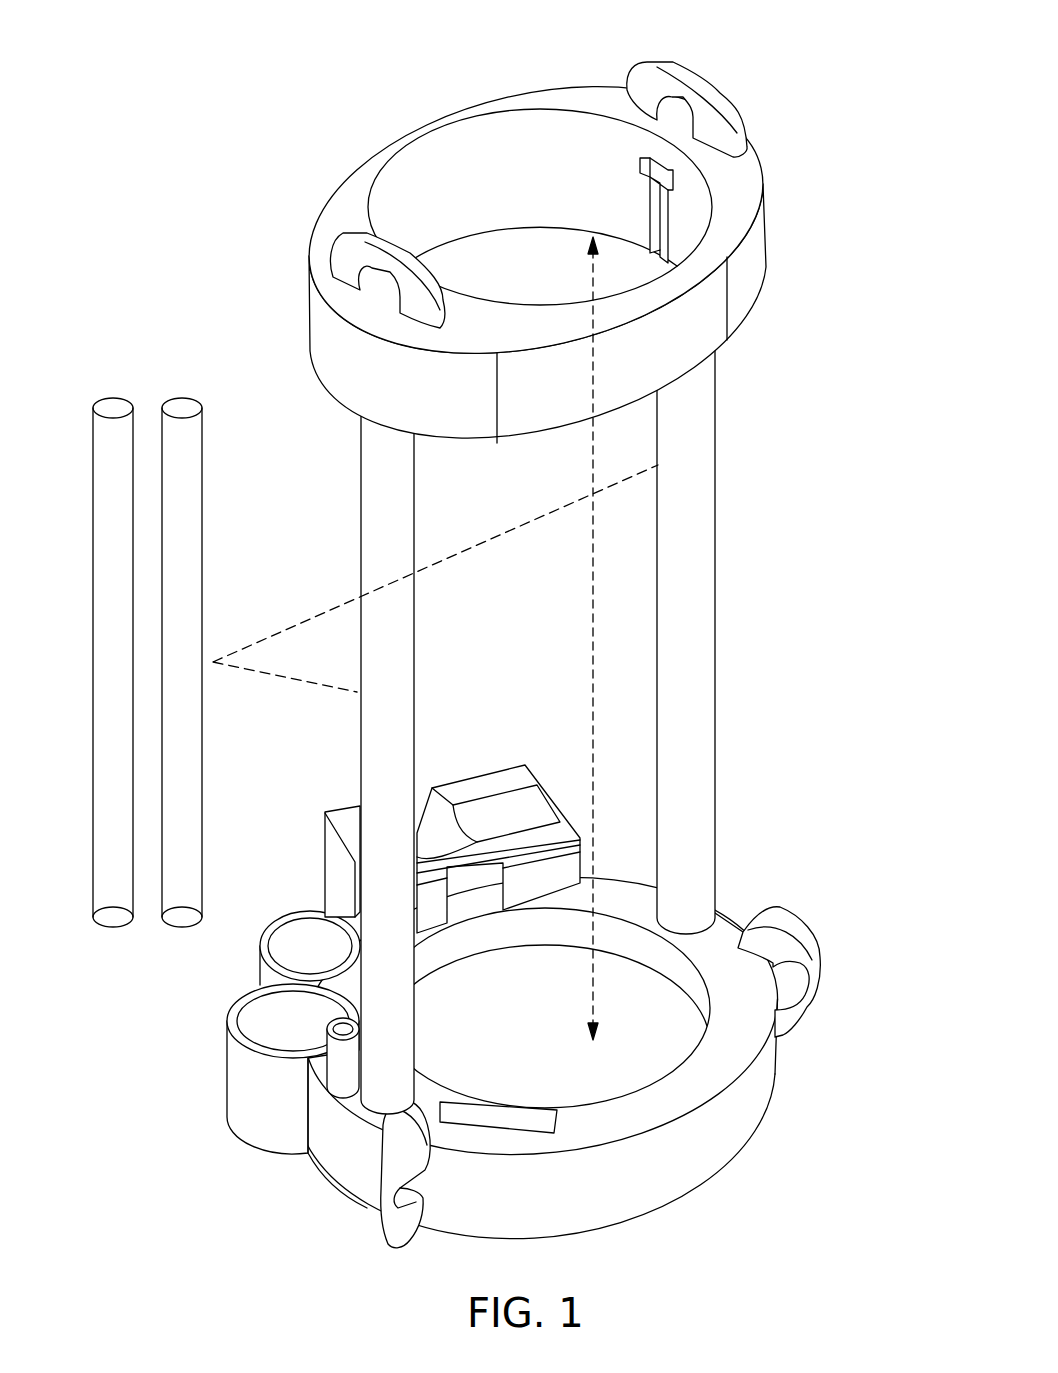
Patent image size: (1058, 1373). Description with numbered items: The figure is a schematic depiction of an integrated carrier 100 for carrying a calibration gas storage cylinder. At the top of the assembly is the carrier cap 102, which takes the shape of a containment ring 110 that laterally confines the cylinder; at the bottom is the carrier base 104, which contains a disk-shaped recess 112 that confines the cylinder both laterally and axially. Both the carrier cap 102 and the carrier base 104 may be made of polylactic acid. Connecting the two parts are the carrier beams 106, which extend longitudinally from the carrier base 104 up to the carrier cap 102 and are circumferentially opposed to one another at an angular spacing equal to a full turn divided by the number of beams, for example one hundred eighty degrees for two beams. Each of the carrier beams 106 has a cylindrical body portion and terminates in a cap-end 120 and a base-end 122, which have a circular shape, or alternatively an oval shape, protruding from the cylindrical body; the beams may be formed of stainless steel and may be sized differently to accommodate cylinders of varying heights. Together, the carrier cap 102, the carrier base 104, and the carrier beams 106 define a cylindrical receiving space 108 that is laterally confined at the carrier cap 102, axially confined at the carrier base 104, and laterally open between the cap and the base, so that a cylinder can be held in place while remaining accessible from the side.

The integrated carrier 100 is at (875, 108).
The carrier cap 102 is at (562, 244).
The carrier base 104 is at (538, 1006).
The carrier beams 106 is at (421, 722).
The cylindrical receiving space 108 is at (593, 694).
The containment ring 110 is at (500, 258).
The disk-shaped recess 112 is at (556, 1045).
The cap-end 120 is at (112, 401).
The base-end 122 is at (116, 926).